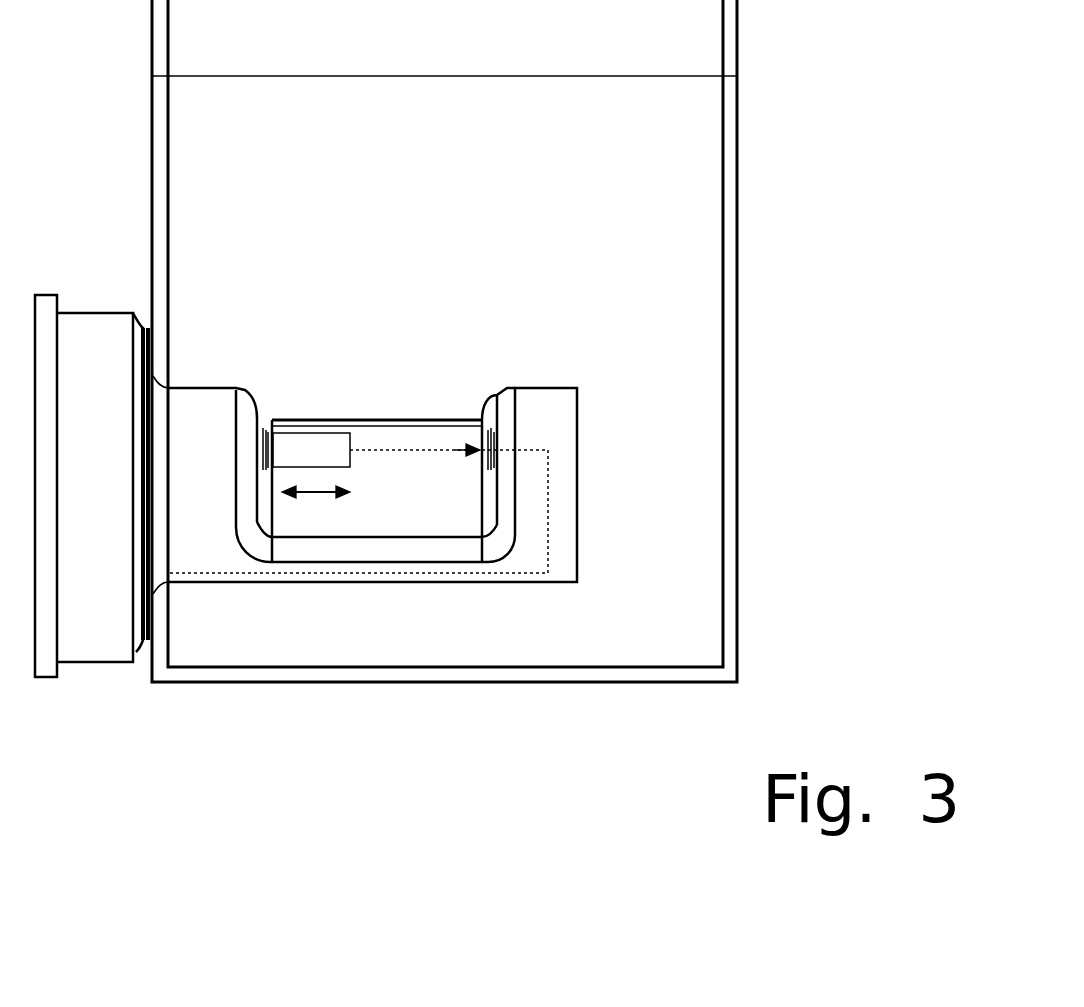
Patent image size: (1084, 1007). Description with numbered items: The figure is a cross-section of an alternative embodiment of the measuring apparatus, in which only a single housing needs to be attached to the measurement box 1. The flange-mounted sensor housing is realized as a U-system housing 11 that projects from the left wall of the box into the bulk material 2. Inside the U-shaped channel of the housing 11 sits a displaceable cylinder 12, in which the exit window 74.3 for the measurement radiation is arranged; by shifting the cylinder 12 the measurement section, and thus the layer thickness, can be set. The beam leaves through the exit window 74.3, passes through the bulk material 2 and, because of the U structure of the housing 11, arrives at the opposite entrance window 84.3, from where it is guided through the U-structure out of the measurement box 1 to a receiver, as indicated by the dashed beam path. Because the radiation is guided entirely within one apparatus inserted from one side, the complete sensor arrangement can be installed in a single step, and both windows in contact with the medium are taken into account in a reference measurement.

The measurement box 1 is at (740, 134).
The bulk material 2 is at (458, 188).
The U-system housing 11 is at (192, 408).
The displaceable cylinder 12 is at (285, 440).
The exit window 74.3 is at (352, 438).
The entrance window 84.3 is at (490, 427).